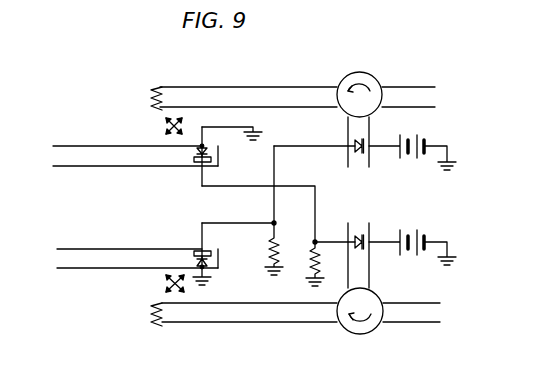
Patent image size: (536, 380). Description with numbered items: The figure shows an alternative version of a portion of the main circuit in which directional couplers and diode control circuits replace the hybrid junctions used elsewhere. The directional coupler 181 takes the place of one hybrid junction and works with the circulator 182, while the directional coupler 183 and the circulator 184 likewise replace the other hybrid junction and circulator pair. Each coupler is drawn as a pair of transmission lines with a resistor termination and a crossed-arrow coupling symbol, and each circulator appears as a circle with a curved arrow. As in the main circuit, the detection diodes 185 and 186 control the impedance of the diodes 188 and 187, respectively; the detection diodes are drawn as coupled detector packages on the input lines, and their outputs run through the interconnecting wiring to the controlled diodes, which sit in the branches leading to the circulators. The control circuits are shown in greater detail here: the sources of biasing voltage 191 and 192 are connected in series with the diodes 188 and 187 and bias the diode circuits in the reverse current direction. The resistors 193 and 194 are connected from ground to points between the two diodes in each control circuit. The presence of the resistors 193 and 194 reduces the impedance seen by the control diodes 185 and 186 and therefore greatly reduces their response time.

The directional coupler 181 is at (164, 126).
The circulator 182 is at (368, 83).
The directional coupler 183 is at (164, 284).
The circulator 184 is at (371, 327).
The detection diode 185 is at (211, 159).
The detection diode 186 is at (205, 250).
The diode 187 is at (368, 232).
The diode 188 is at (366, 137).
The source of biasing voltage 191 is at (420, 132).
The source of biasing voltage 192 is at (412, 224).
The resistor 193 is at (272, 243).
The resistor 194 is at (310, 265).